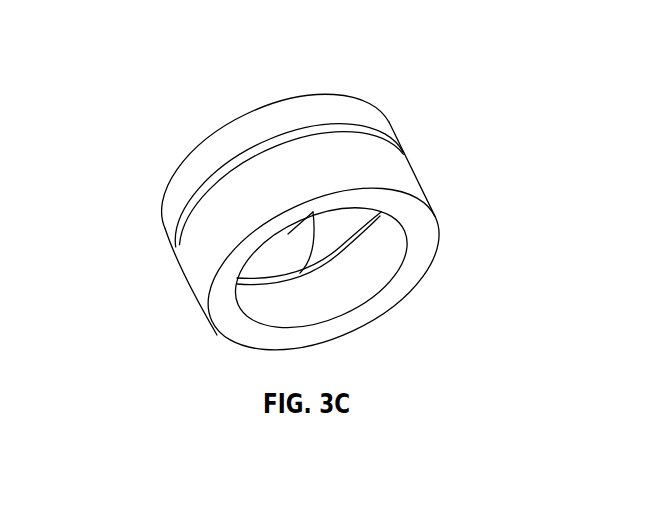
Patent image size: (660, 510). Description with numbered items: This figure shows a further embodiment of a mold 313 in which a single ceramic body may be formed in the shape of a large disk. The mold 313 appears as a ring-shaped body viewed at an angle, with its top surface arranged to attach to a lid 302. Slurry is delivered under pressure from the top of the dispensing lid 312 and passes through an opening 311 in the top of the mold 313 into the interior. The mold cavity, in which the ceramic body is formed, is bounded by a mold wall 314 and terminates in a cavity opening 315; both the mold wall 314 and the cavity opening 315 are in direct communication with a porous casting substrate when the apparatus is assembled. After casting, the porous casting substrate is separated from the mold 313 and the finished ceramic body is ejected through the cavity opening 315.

The lid 302 is at (330, 105).
The opening 311 is at (337, 251).
The dispensing lid 312 is at (243, 118).
The mold 313 is at (362, 158).
The mold wall 314 is at (417, 222).
The cavity opening 315 is at (365, 290).